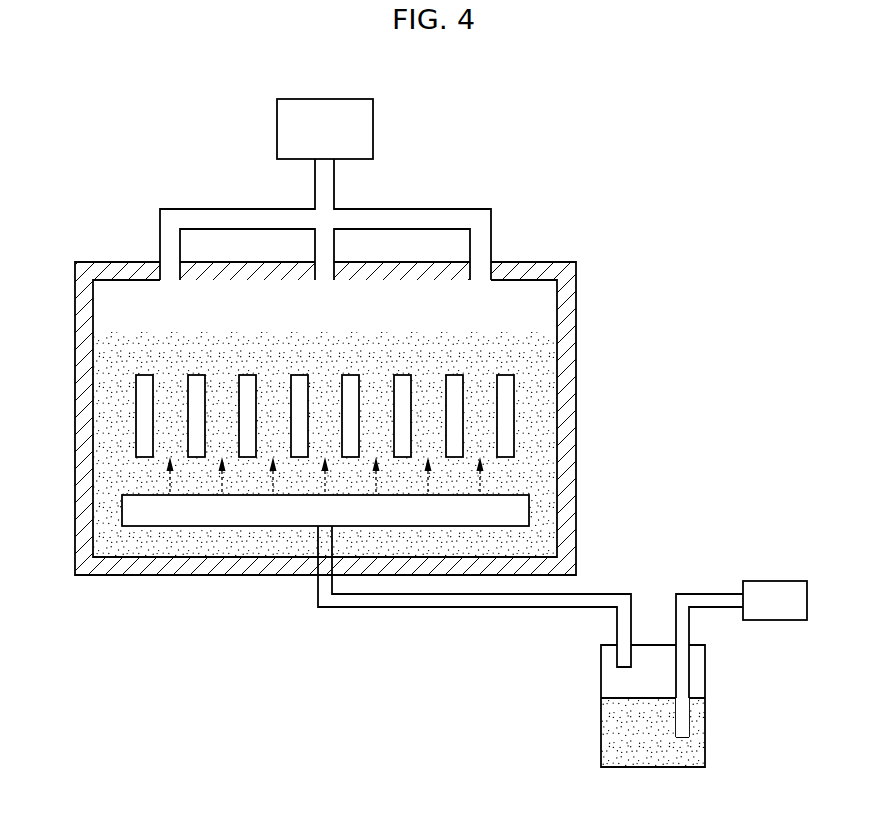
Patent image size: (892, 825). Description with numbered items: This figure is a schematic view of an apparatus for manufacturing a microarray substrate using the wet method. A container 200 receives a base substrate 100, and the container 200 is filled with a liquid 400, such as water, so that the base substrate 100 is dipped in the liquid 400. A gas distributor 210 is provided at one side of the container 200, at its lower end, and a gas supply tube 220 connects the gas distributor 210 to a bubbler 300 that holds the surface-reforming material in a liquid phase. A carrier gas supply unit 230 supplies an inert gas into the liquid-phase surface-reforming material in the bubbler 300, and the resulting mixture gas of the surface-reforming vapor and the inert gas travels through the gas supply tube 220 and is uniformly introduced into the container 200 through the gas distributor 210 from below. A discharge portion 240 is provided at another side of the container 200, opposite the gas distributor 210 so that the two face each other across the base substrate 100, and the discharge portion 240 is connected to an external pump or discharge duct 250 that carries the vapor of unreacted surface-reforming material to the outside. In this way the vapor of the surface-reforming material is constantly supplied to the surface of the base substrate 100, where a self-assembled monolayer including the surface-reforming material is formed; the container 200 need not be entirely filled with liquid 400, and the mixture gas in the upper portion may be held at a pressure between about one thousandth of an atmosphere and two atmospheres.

The base substrate 100 is at (507, 417).
The container 200 is at (570, 309).
The gas distributor 210 is at (193, 517).
The gas supply tube 220 is at (617, 598).
The carrier gas supply unit 230 is at (777, 592).
The discharge portion 240 is at (483, 231).
The external pump or discharge duct 250 is at (365, 118).
The bubbler 300 is at (703, 733).
The liquid 400 is at (538, 369).